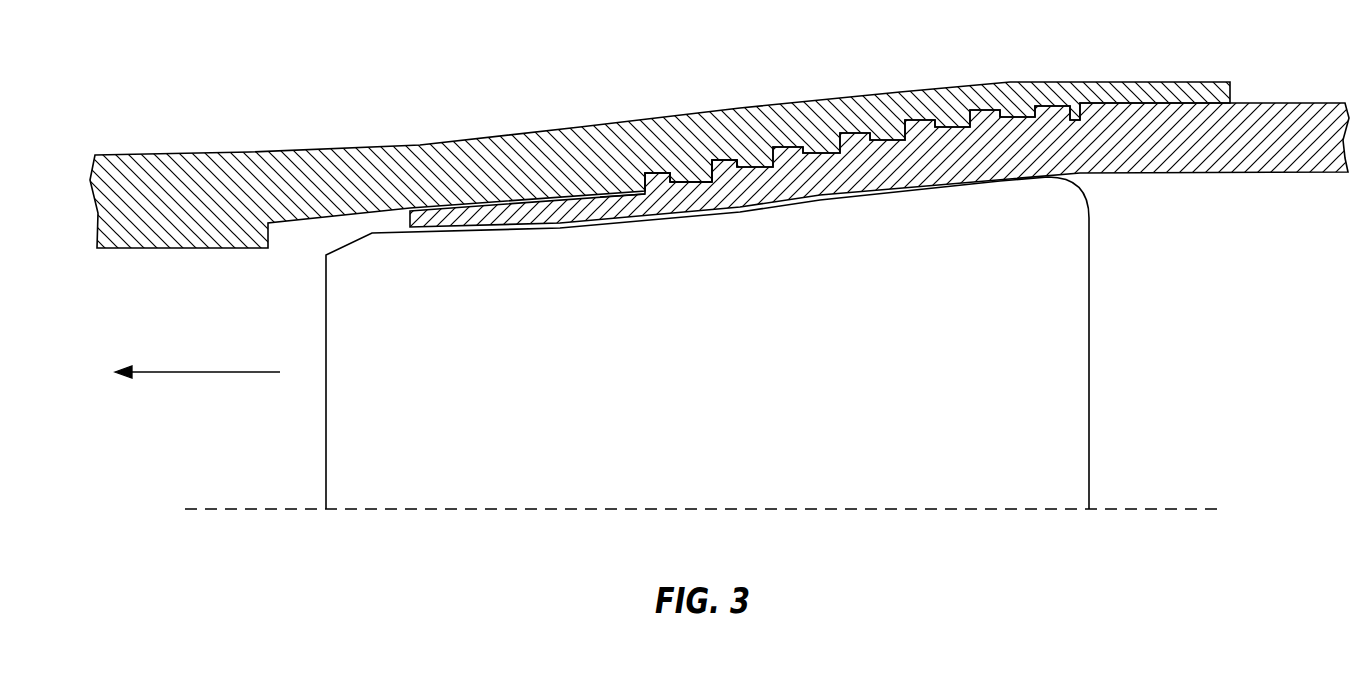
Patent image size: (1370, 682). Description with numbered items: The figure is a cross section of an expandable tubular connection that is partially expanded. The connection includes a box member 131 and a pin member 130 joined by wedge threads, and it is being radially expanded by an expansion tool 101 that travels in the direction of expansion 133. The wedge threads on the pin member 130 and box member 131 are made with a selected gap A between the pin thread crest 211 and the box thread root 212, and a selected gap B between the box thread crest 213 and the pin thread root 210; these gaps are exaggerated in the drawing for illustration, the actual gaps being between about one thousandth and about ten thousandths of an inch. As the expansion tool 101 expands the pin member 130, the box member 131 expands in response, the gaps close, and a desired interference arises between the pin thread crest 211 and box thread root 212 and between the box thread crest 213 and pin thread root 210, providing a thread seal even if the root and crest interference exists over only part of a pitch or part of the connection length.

The box member 131 is at (189, 216).
The pin member 130 is at (1290, 151).
The box thread root 212 is at (657, 165).
The box thread crest 213 is at (693, 167).
The pin thread crest 211 is at (655, 200).
The pin thread root 210 is at (688, 197).
The direction of expansion 133 is at (197, 371).
The expansion tool 101 is at (325, 466).